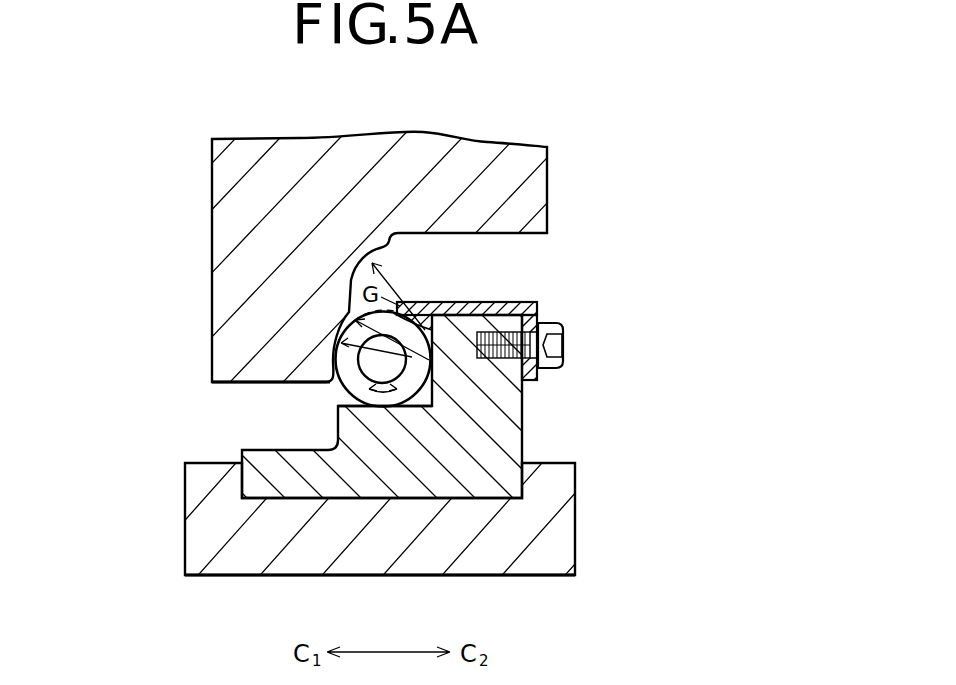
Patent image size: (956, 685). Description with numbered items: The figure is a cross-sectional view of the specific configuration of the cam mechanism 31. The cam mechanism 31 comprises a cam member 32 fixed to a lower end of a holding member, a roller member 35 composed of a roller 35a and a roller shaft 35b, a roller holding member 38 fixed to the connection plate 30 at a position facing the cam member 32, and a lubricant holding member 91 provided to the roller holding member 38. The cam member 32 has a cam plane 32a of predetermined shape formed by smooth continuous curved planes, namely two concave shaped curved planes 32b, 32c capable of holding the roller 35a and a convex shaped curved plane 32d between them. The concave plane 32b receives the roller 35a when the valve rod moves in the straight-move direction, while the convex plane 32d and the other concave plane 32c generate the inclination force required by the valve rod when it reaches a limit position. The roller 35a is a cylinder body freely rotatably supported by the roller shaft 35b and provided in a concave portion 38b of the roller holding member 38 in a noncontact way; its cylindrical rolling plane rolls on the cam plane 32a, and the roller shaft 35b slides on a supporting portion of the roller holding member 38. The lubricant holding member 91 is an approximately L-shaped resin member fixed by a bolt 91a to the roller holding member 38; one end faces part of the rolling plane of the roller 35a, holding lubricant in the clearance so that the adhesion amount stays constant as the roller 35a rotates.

The connection plate 30 is at (478, 547).
The cam mechanism 31 is at (604, 193).
The cam member 32 is at (220, 232).
The cam plane 32a is at (652, 322).
The concave shaped curved plane 32b is at (523, 407).
The concave shaped curved plane 32c is at (561, 328).
The convex shaped curved plane 32d is at (523, 383).
The roller member 35 is at (117, 325).
The roller 35a is at (370, 367).
The roller shaft 35b is at (338, 376).
The roller holding member 38 is at (510, 433).
The concave portion 38b is at (418, 401).
The lubricant holding member 91 is at (484, 302).
The bolt 91a is at (550, 322).